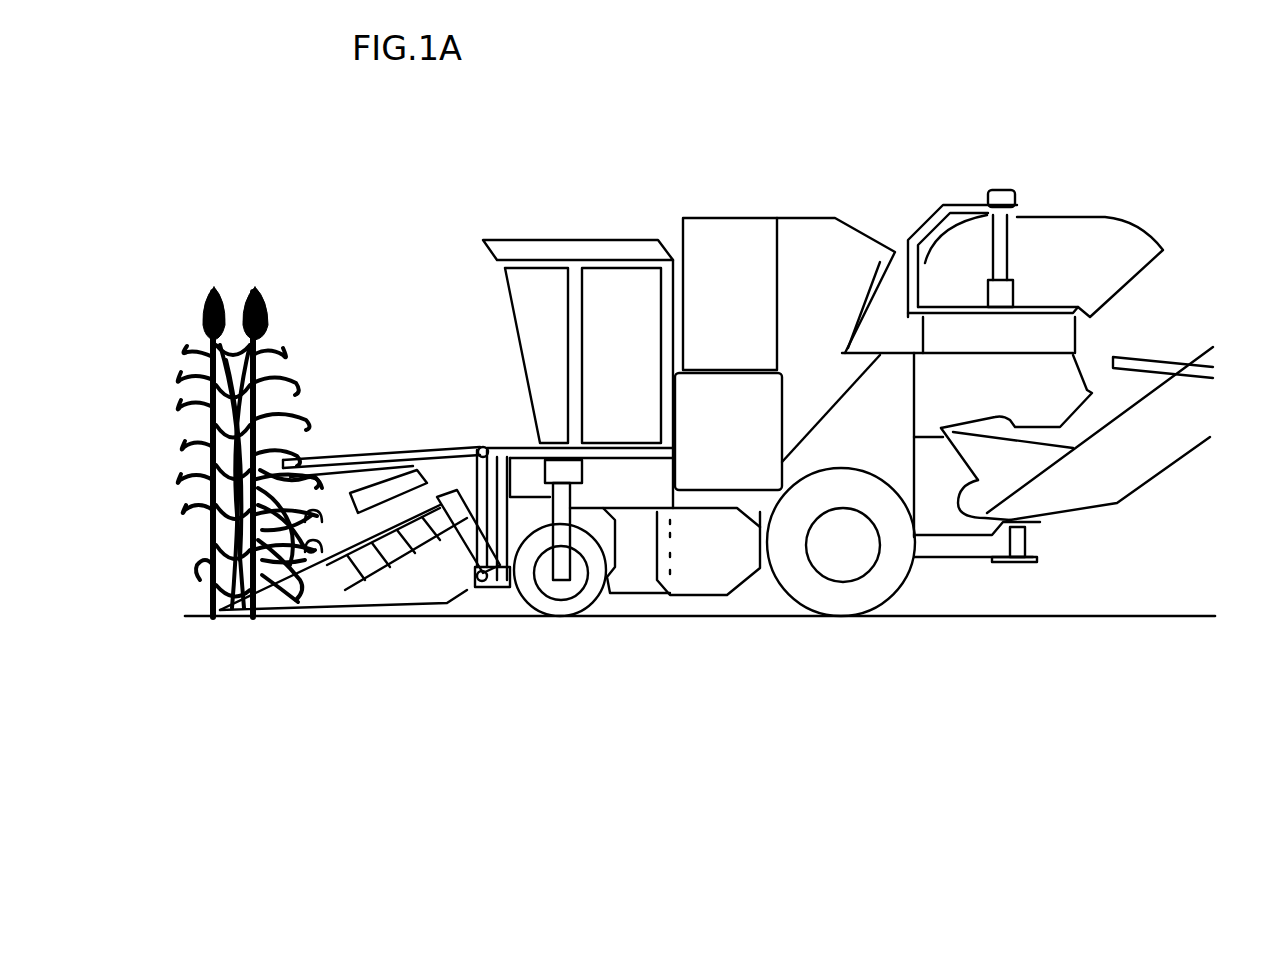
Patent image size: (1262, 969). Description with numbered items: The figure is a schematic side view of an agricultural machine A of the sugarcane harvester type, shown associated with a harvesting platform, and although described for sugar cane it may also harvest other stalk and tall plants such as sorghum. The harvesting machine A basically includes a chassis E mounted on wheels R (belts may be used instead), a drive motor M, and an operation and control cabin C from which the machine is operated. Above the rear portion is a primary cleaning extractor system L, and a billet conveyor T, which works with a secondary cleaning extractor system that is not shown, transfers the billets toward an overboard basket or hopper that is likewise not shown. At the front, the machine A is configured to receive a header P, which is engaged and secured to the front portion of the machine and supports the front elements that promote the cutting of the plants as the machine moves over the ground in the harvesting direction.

The agricultural machine A is at (365, 207).
The operation and control cabin C is at (617, 297).
The header P is at (403, 437).
The drive motor M is at (728, 431).
The wheels R is at (587, 598).
The chassis E is at (719, 568).
The primary cleaning extractor system L is at (1125, 212).
The billet conveyor T is at (1140, 458).